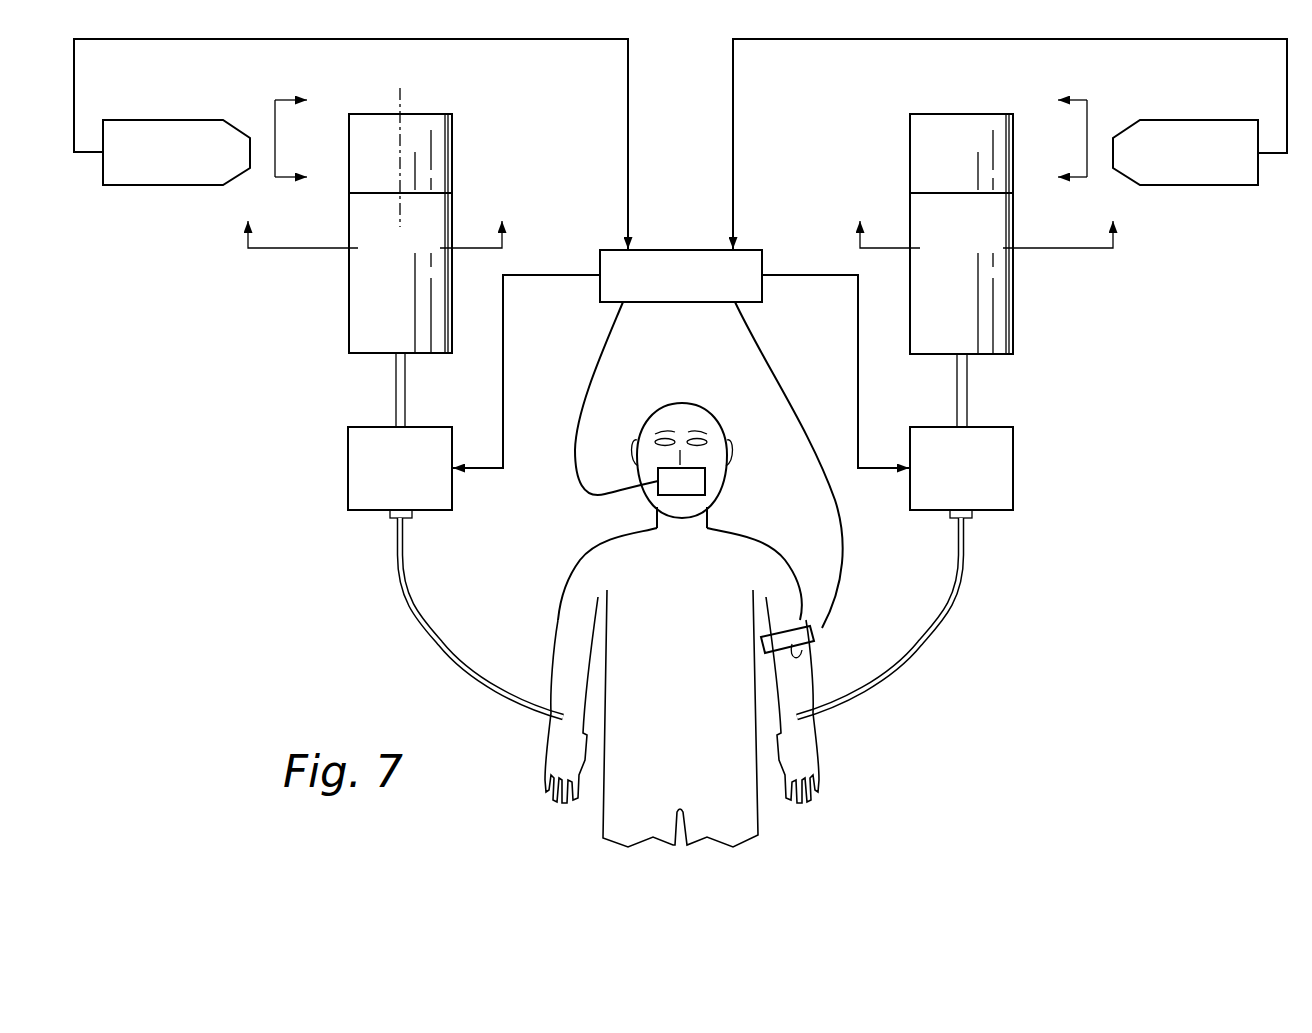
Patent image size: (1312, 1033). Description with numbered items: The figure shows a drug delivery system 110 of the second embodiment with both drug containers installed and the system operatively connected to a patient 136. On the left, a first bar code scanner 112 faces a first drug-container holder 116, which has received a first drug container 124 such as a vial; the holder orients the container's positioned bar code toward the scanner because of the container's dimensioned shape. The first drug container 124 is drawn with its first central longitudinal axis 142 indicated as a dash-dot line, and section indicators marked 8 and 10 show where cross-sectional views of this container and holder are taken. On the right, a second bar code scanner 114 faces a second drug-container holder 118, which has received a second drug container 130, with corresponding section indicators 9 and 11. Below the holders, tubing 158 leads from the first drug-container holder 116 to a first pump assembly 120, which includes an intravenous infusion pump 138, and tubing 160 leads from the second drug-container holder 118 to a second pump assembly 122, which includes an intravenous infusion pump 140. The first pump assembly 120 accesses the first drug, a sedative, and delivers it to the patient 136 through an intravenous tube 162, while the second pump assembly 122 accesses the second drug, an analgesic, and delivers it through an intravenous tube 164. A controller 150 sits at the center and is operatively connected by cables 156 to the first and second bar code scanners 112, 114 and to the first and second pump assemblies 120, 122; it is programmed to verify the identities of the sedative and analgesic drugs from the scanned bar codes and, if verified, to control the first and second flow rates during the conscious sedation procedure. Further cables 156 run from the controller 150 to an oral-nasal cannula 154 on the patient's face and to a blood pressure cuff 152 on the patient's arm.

The drug delivery system 110 is at (1110, 661).
The first bar code scanner 112 is at (168, 186).
The second bar code scanner 114 is at (1192, 186).
The first drug-container holder 116 is at (375, 290).
The second drug-container holder 118 is at (987, 290).
The first pump assembly 120 is at (353, 532).
The second pump assembly 122 is at (1009, 532).
The first drug container 124 is at (418, 147).
The second drug container 130 is at (943, 148).
The patient 136 is at (697, 636).
The intravenous infusion pump 138 is at (362, 458).
The intravenous infusion pump 140 is at (998, 462).
The first central longitudinal axis 142 is at (400, 100).
The controller 150 is at (675, 250).
The blood pressure cuff 152 is at (812, 660).
The oral-nasal cannula 154 is at (687, 481).
The cables 156 is at (222, 40).
The tubing 158 is at (396, 397).
The tubing 160 is at (967, 387).
The intravenous tube 162 is at (437, 638).
The intravenous tube 164 is at (905, 660).
The section line 8- 8 is at (376, 219).
The section line 9- 9 is at (988, 219).
The section line 10- 10 is at (308, 139).
The section line 11- 11 is at (1057, 139).